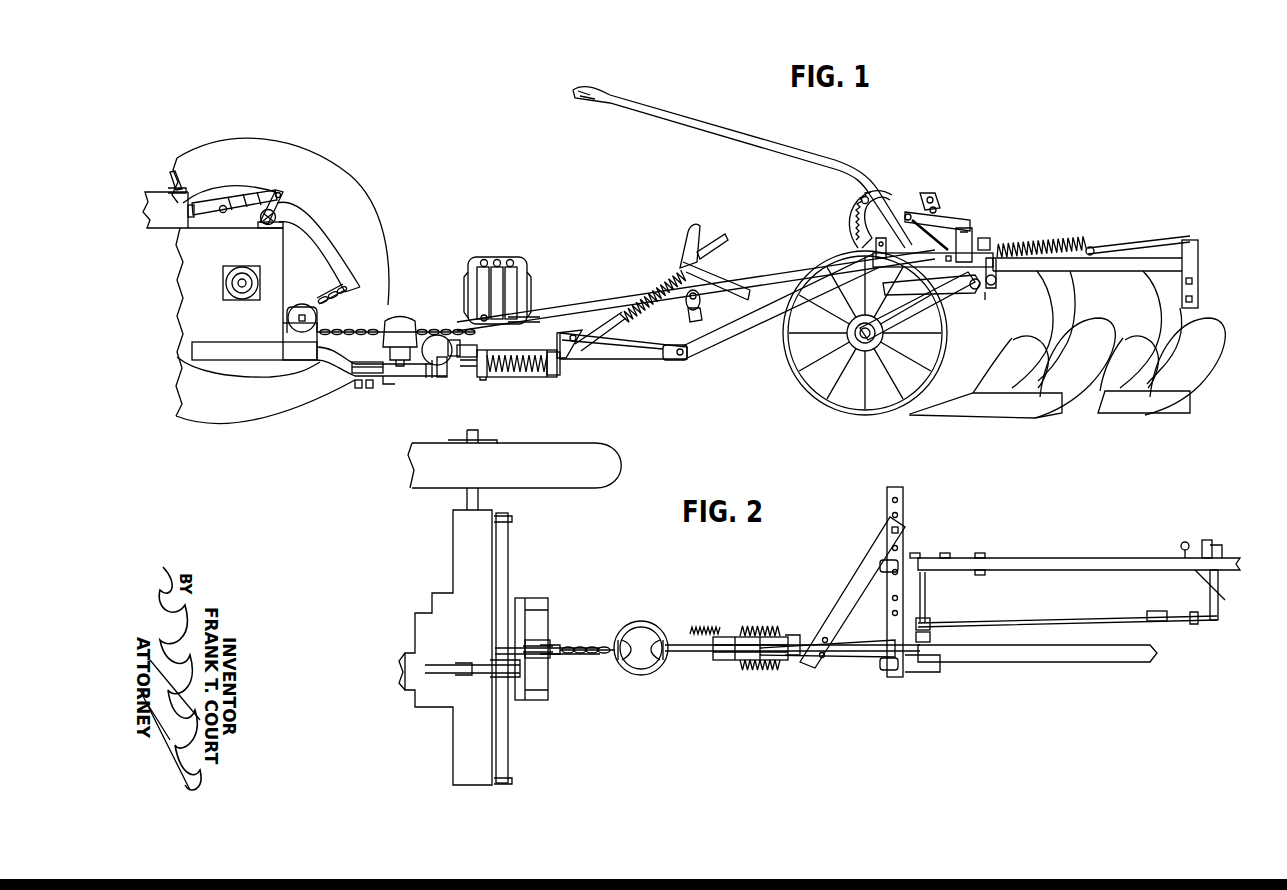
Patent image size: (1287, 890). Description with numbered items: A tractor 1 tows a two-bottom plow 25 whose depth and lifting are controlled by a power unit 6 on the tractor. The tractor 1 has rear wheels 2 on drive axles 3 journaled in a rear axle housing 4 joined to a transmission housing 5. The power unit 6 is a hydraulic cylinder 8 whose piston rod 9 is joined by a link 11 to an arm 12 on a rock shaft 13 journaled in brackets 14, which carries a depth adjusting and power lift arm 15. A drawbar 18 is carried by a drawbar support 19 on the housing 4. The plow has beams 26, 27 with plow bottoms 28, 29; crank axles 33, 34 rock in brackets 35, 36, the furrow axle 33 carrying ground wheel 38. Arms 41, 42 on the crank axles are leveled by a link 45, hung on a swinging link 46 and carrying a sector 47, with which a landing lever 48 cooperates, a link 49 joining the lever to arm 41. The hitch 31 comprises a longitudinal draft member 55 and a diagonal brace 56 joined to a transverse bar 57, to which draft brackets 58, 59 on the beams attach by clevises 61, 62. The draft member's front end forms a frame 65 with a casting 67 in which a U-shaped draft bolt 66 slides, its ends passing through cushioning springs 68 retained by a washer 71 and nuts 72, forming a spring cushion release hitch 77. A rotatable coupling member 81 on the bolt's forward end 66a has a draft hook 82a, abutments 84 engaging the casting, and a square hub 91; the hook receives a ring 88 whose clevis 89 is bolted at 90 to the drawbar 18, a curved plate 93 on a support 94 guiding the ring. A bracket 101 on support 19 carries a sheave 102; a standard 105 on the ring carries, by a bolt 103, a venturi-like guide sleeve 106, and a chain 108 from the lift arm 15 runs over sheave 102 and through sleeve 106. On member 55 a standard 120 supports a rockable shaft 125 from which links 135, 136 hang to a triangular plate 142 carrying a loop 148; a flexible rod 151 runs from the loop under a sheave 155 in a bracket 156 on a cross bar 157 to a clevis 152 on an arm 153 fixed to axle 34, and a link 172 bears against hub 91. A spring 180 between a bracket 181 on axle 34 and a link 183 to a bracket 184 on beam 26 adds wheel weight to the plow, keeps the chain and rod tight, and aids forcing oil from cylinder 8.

In FIG. 1, the tractor 1 is at (207, 133).
In FIG. 1, the rear drive wheels 2 is at (292, 158).
In FIG. 2, the rear drive wheels 2 is at (589, 475).
In FIG. 1, the drive axles 3 is at (238, 283).
In FIG. 1, the rear axle housing 4 is at (215, 318).
In FIG. 2, the rear axle housing 4 is at (456, 598).
In FIG. 1, the transmission housing 5 is at (183, 273).
In FIG. 2, the transmission housing 5 is at (413, 623).
In FIG. 1, the power unit 6 is at (194, 188).
In FIG. 1, the hydraulic cylinder 8 is at (155, 195).
In FIG. 1, the piston rod 9 is at (206, 209).
In FIG. 1, the link 11 is at (244, 203).
In FIG. 1, the arm 12 is at (279, 203).
In FIG. 1, the rock shaft 13 is at (285, 212).
In FIG. 2, the rock shaft 13 is at (508, 552).
In FIG. 1, the brackets 14 is at (265, 229).
In FIG. 2, the brackets 14 is at (512, 519).
In FIG. 1, the depth adjusting and power lift arm 15 is at (315, 235).
In FIG. 2, the depth adjusting and power lift arm 15 is at (562, 648).
In FIG. 1, the drawbar 18 is at (337, 367).
In FIG. 2, the drawbar 18 is at (576, 660).
In FIG. 1, the drawbar support 19 is at (257, 364).
In FIG. 2, the drawbar support 19 is at (520, 608).
In FIG. 1, the plow 25 is at (982, 193).
In FIG. 1, the plow beam 26 is at (1123, 265).
In FIG. 2, the plow beam 26 is at (1070, 662).
In FIG. 1, the plow beam 27 is at (1063, 300).
In FIG. 2, the plow beam 27 is at (1073, 560).
In FIG. 1, the plow bottom 28 is at (1130, 410).
In FIG. 1, the plow bottom 29 is at (1008, 410).
In FIG. 1, the hitch 31 is at (615, 369).
In FIG. 2, the hitch 31 is at (764, 620).
In FIG. 1, the crank axle 33 is at (900, 318).
In FIG. 2, the crank axle 33 is at (1181, 545).
In FIG. 1, the crank axle 34 is at (945, 294).
In FIG. 2, the crank axle 34 is at (1218, 582).
In FIG. 1, the bracket 35 is at (996, 282).
In FIG. 2, the bracket 36 is at (1204, 543).
In FIG. 1, the ground wheel 38 is at (792, 386).
In FIG. 1, the arm 41 is at (975, 232).
In FIG. 1, the arm 42 is at (991, 253).
In FIG. 1, the link 45 is at (913, 260).
In FIG. 1, the swinging link 46 is at (880, 260).
In FIG. 1, the sector 47 is at (852, 220).
In FIG. 1, the landing lever 48 is at (725, 145).
In FIG. 1, the link 49 is at (950, 220).
In FIG. 1, the longitudinal draft member 55 is at (630, 345).
In FIG. 2, the longitudinal draft member 55 is at (793, 658).
In FIG. 2, the diagonal brace 56 is at (862, 578).
In FIG. 2, the transverse bar 57 is at (905, 546).
In FIG. 1, the forward draft bracket 58 is at (708, 336).
In FIG. 2, the forward draft bracket 58 is at (940, 666).
In FIG. 2, the forward draft bracket 59 is at (950, 558).
In FIG. 1, the clevis 61 is at (677, 360).
In FIG. 2, the clevis 61 is at (888, 666).
In FIG. 2, the clevis 62 is at (895, 572).
In FIG. 1, the frame 65 is at (499, 385).
In FIG. 1, the draft bolt 66 is at (559, 356).
In FIG. 1, the forward end of draft bolt 66a is at (390, 382).
In FIG. 1, the casting 67 is at (441, 378).
In FIG. 1, the cushioning springs 68 is at (520, 374).
In FIG. 1, the slidable washer 71 is at (550, 362).
In FIG. 1, the nuts 72 is at (558, 350).
In FIG. 1, the spring cushion release hitch 77 is at (423, 394).
In FIG. 2, the spring cushion release hitch 77 is at (710, 622).
In FIG. 1, the rotatable coupling member 81 is at (437, 329).
In FIG. 1, the draft hook section 82a is at (394, 318).
In FIG. 1, the abutment sections 84 is at (458, 336).
In FIG. 2, the ring 88 is at (641, 620).
In FIG. 1, the clevis 89 is at (355, 381).
In FIG. 1, the bolt 90 is at (333, 350).
In FIG. 2, the hub 91 is at (657, 672).
In FIG. 1, the plate 93 is at (432, 378).
In FIG. 1, the support 94 is at (443, 378).
In FIG. 1, the bracket 101 is at (290, 326).
In FIG. 2, the bracket 101 is at (536, 640).
In FIG. 1, the sheave 102 is at (294, 307).
In FIG. 2, the sheave 102 is at (540, 650).
In FIG. 1, the bolt 103 is at (368, 386).
In FIG. 1, the standard 105 is at (364, 362).
In FIG. 1, the guide sleeve 106 is at (348, 289).
In FIG. 2, the guide sleeve 106 is at (625, 665).
In FIG. 1, the chain 108 is at (346, 326).
In FIG. 1, the standard 120 is at (499, 275).
In FIG. 1, the shaft 125 is at (497, 256).
In FIG. 1, the link 135 is at (472, 273).
In FIG. 1, the link 136 is at (523, 271).
In FIG. 1, the triangular plate 142 is at (490, 316).
In FIG. 1, the loop 148 is at (530, 317).
In FIG. 2, the loop 148 is at (790, 640).
In FIG. 1, the rod 151 is at (768, 278).
In FIG. 2, the rod 151 is at (1043, 620).
In FIG. 1, the clevis 152 is at (922, 205).
In FIG. 2, the clevis 152 is at (1157, 610).
In FIG. 1, the arm 153 is at (937, 208).
In FIG. 2, the arm 153 is at (1194, 624).
In FIG. 1, the sheave 155 is at (686, 312).
In FIG. 2, the sheave 155 is at (930, 624).
In FIG. 1, the bracket 156 is at (689, 318).
In FIG. 2, the cross bar 157 is at (927, 595).
In FIG. 2, the link 172 is at (690, 636).
In FIG. 1, the spring 180 is at (1050, 253).
In FIG. 1, the bracket 181 is at (986, 298).
In FIG. 1, the link 183 is at (1125, 244).
In FIG. 1, the bracket 184 is at (1199, 251).